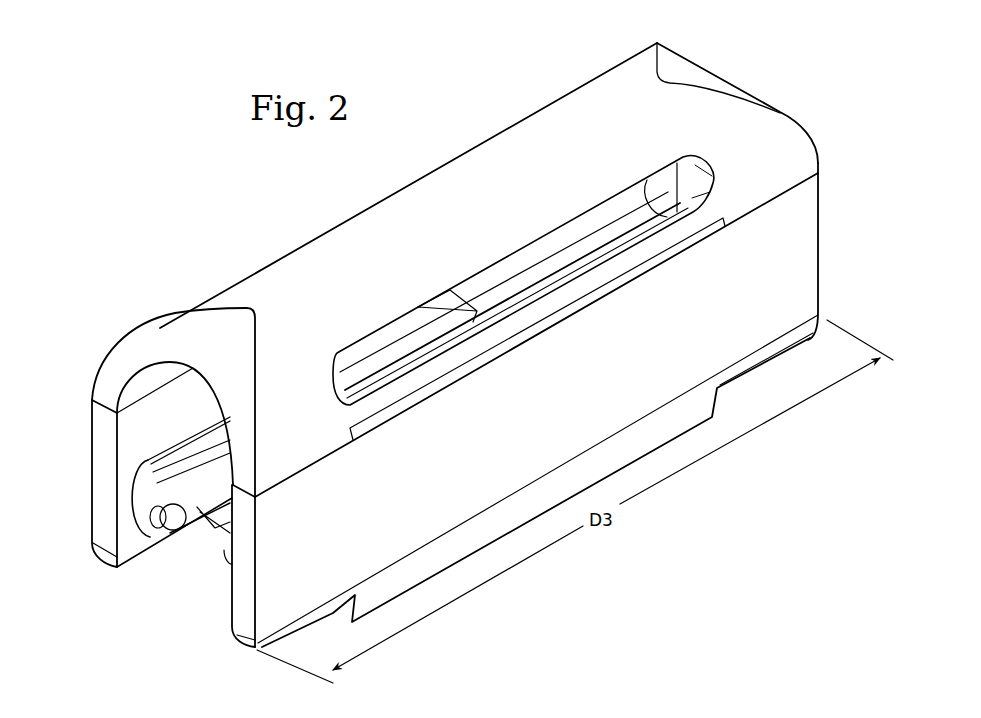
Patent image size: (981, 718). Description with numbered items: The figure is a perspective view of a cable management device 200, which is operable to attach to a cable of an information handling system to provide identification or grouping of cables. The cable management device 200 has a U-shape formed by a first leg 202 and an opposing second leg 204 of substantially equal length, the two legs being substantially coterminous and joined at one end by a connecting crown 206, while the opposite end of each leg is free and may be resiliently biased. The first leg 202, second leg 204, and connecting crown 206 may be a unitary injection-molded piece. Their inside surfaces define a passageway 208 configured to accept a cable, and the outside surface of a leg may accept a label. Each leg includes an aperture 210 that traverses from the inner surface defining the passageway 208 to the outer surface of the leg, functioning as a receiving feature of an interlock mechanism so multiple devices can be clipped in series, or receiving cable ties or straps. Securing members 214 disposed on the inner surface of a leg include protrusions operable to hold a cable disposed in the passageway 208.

The cable management device 200 is at (792, 113).
The first leg 202 is at (818, 247).
The second leg 204 is at (100, 450).
The connecting crown 206 is at (259, 283).
The passageway 208 is at (158, 598).
The aperture 210 is at (557, 250).
The securing members 214 is at (127, 532).